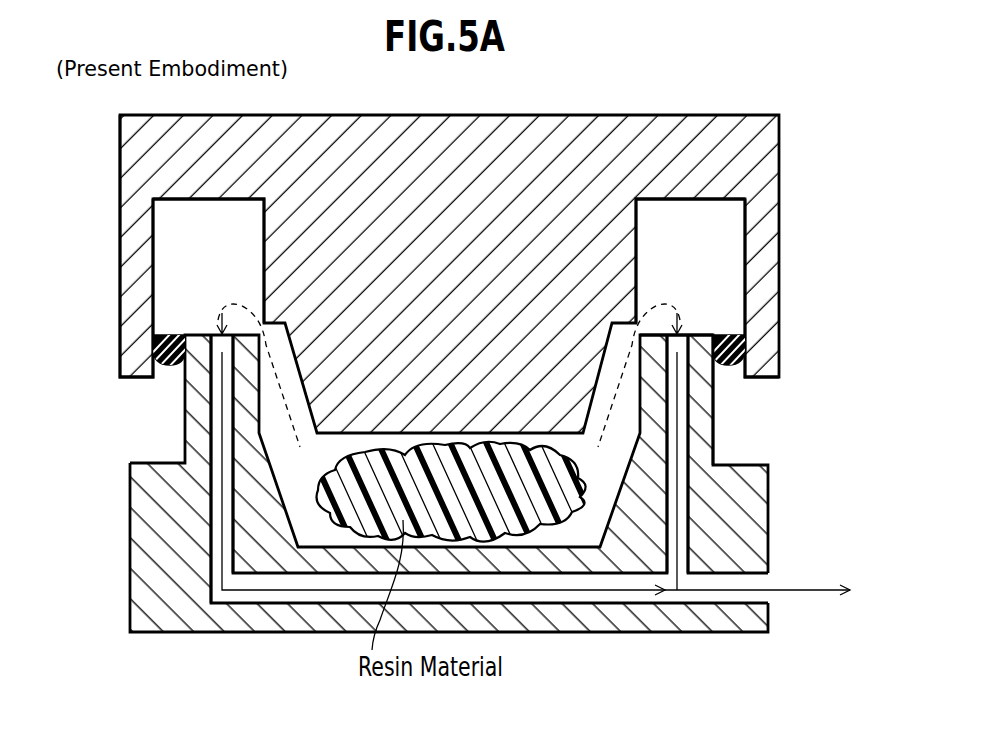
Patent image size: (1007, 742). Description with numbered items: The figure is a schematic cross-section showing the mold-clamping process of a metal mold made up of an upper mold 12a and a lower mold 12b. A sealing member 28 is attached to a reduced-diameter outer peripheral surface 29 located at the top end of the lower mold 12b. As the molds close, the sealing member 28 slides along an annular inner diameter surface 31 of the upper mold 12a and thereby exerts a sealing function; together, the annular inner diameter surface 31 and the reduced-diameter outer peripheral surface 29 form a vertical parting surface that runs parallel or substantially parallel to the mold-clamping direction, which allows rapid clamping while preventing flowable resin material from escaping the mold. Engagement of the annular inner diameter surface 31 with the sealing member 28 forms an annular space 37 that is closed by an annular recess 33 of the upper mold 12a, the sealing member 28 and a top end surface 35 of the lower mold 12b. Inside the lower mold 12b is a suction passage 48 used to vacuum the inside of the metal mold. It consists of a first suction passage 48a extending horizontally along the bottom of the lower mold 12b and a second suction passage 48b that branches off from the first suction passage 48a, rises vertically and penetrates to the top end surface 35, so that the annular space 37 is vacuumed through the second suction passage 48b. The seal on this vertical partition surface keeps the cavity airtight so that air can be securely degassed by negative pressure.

The upper mold 12a is at (666, 115).
The lower mold 12b is at (718, 632).
The sealing member 28 is at (744, 340).
The reduced-diameter outer peripheral surface 29 is at (732, 365).
The annular inner diameter surface 31 is at (153, 280).
The annular recess 33 is at (702, 204).
The top end surface 35 is at (702, 334).
The annular space 37 is at (225, 260).
The suction passage 48 is at (678, 678).
The first suction passage 48a is at (533, 602).
The second suction passage 48b is at (690, 442).